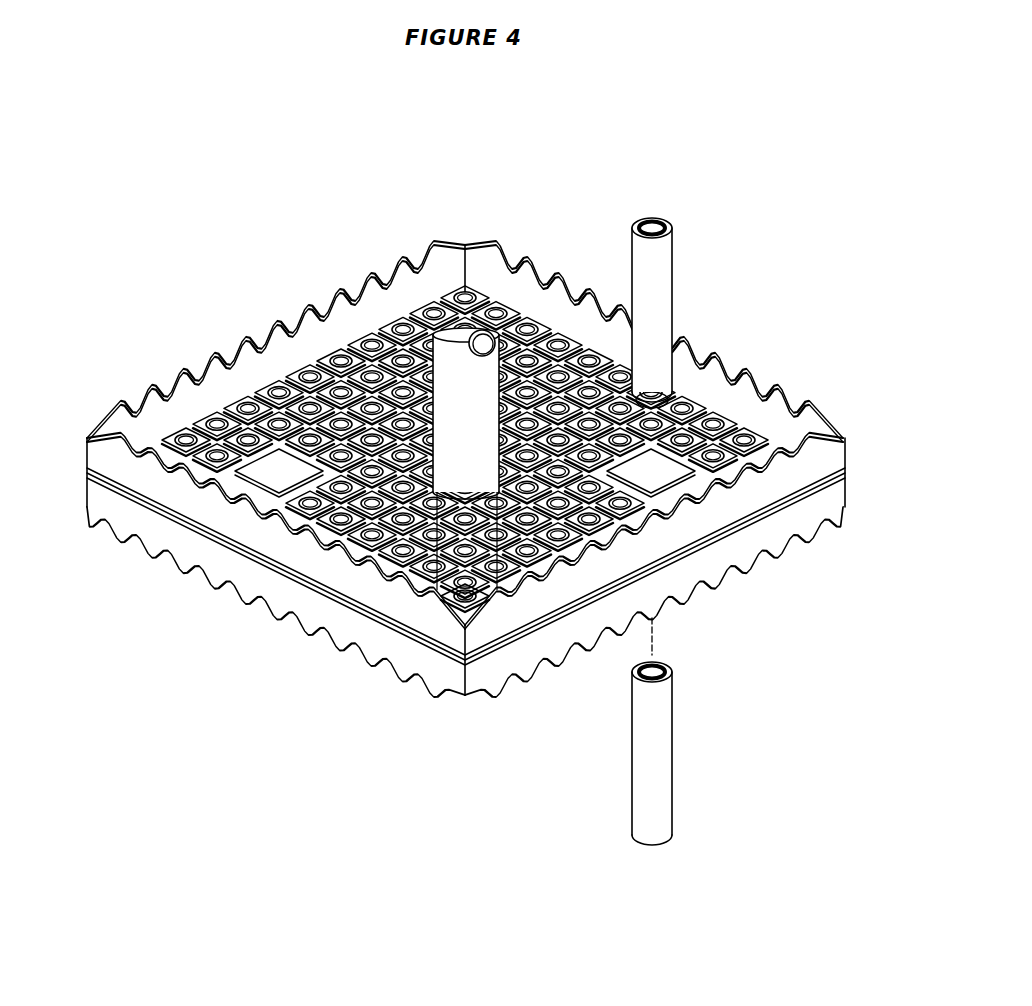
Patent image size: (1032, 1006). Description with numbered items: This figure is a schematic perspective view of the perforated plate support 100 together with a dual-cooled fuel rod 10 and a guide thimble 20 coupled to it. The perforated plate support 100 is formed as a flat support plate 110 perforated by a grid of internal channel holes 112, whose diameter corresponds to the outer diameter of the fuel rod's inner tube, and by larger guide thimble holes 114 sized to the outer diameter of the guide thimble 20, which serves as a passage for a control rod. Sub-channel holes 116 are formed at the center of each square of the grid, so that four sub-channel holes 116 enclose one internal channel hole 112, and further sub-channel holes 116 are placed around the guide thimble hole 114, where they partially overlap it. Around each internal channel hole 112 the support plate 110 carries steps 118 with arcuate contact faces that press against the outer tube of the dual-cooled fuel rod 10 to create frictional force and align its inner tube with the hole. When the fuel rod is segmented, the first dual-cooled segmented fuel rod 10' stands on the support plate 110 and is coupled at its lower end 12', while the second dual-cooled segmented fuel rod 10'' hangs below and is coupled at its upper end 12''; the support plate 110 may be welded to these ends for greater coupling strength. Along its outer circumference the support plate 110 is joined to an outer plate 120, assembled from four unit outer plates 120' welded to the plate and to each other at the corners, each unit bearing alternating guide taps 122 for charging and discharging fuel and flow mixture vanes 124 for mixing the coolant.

The perforated plate support 100 is at (195, 325).
The dual-cooled fuel rod 10 is at (712, 310).
The first dual-cooled segmented fuel rod 10' is at (704, 310).
The lower end of dual-cooled fuel rod 12' is at (701, 353).
The step 118 is at (755, 425).
The internal channel hole 112 is at (760, 438).
The sub-channel hole 116 is at (747, 478).
The guide thimble hole 114 is at (710, 470).
The support plate 110 is at (300, 505).
The flow mixture vane 124 is at (333, 648).
The guide tap 122 is at (372, 655).
The outer plate 120 is at (466, 510).
The unit outer plate 120' is at (654, 642).
The upper end of dual-cooled fuel rod 12'' is at (721, 673).
The second dual-cooled segmented fuel rod 10'' is at (721, 731).
The guide thimble 20 is at (450, 350).